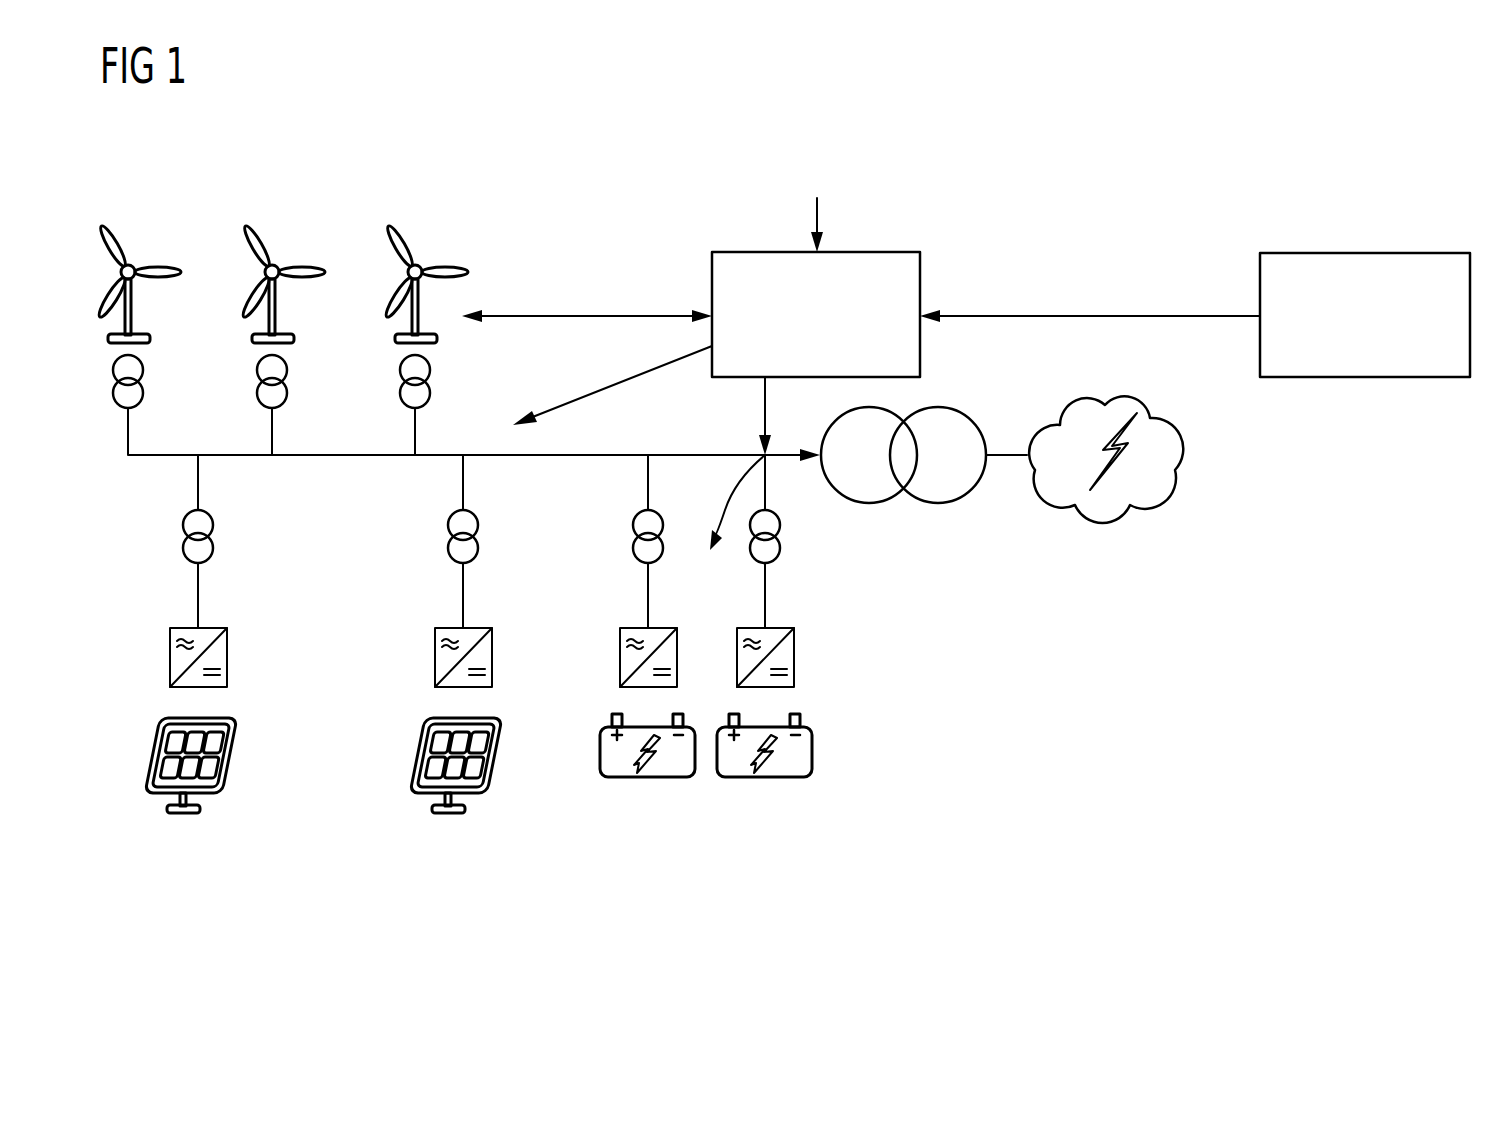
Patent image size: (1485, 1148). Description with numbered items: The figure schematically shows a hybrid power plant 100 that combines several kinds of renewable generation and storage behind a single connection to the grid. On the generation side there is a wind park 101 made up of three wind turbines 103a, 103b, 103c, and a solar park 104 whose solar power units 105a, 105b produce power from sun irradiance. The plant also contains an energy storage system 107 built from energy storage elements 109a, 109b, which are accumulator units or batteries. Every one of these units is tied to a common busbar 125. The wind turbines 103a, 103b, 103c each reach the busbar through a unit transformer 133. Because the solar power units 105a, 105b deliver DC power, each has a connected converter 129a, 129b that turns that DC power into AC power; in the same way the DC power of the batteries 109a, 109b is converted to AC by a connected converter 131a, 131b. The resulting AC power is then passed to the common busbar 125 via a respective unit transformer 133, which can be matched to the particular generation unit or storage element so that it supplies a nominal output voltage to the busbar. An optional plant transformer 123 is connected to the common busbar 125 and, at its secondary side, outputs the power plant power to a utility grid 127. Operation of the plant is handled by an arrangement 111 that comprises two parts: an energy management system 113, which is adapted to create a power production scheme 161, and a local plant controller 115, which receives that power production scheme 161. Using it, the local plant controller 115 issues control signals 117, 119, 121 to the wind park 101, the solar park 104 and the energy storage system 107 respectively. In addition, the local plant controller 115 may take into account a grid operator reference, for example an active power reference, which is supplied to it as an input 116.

The hybrid power plant 100 is at (1395, 125).
The wind park 101 is at (300, 125).
The wind turbine 103a is at (148, 218).
The wind turbine 103b is at (291, 218).
The wind turbine 103c is at (435, 218).
The solar park 104 is at (326, 872).
The solar power unit 105a is at (236, 755).
The solar power unit 105b is at (501, 755).
The energy storage system 107 is at (707, 872).
The energy storage element 109a is at (648, 778).
The energy storage element 109b is at (765, 778).
The arrangement for operating the hybrid power plant 111 is at (1255, 455).
The energy management system 113 is at (1366, 253).
The local plant controller 115 is at (769, 252).
The input 116 is at (822, 212).
The control signal 117 is at (465, 312).
The control signal 119 is at (513, 424).
The control signal 121 is at (763, 453).
The plant transformer 123 is at (933, 545).
The common busbar 125 is at (447, 455).
The utility grid 127 is at (1125, 395).
The converter 129a is at (216, 628).
The converter 129b is at (449, 628).
The converter 131a is at (634, 628).
The converter 131b is at (783, 628).
The unit transformer 133 is at (143, 371).
The power production scheme 161 is at (922, 310).